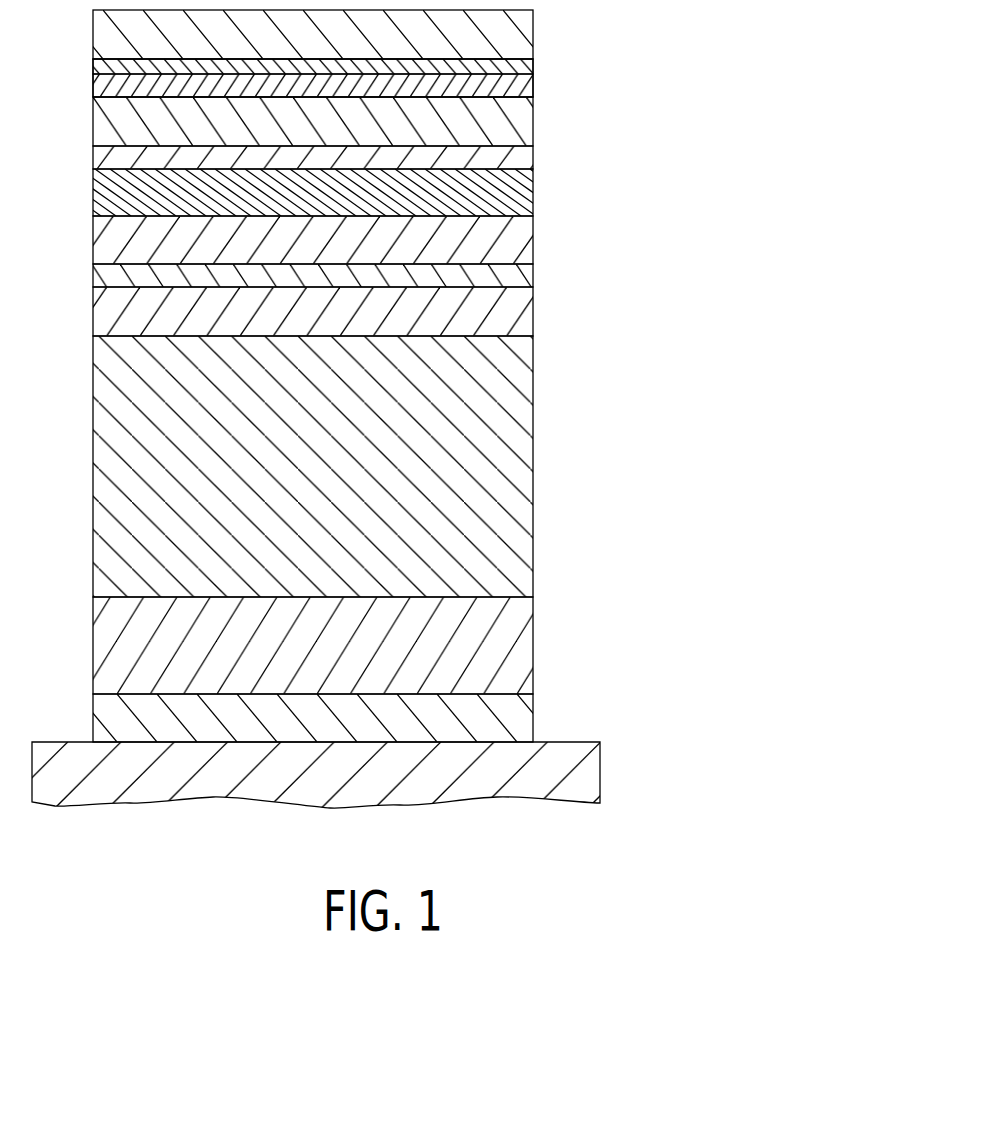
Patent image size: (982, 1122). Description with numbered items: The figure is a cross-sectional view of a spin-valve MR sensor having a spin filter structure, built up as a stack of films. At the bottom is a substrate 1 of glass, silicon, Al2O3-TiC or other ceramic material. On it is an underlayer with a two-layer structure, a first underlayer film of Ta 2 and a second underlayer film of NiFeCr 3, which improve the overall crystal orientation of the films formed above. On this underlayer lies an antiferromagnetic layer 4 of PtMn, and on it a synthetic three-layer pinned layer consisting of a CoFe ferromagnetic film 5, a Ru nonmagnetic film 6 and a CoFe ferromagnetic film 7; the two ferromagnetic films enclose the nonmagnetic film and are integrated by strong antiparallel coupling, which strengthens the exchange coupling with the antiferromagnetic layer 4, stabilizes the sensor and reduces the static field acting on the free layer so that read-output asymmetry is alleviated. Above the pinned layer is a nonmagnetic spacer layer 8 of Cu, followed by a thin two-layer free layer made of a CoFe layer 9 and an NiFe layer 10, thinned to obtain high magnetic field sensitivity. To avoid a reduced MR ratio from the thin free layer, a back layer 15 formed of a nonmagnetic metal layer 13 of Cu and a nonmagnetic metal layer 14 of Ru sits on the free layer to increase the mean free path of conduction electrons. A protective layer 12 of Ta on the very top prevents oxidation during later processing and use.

The substrate 1 is at (583, 772).
The first underlayer film of Ta 2 is at (508, 715).
The second underlayer film of NiFeCr 3 is at (510, 635).
The antiferromagnetic layer 4 is at (508, 455).
The CoFe ferromagnetic film 5 is at (533, 310).
The Ru nonmagnetic film 6 is at (533, 273).
The CoFe ferromagnetic film 7 is at (533, 239).
The nonmagnetic spacer layer 8 is at (533, 190).
The CoFe layer 9 is at (522, 157).
The NiFe layer 10 is at (522, 121).
The protective layer 12 is at (515, 33).
The nonmagnetic metal layer of Cu 13 is at (523, 85).
The nonmagnetic metal layer of Ru 14 is at (523, 63).
The back layer 15 is at (777, 50).